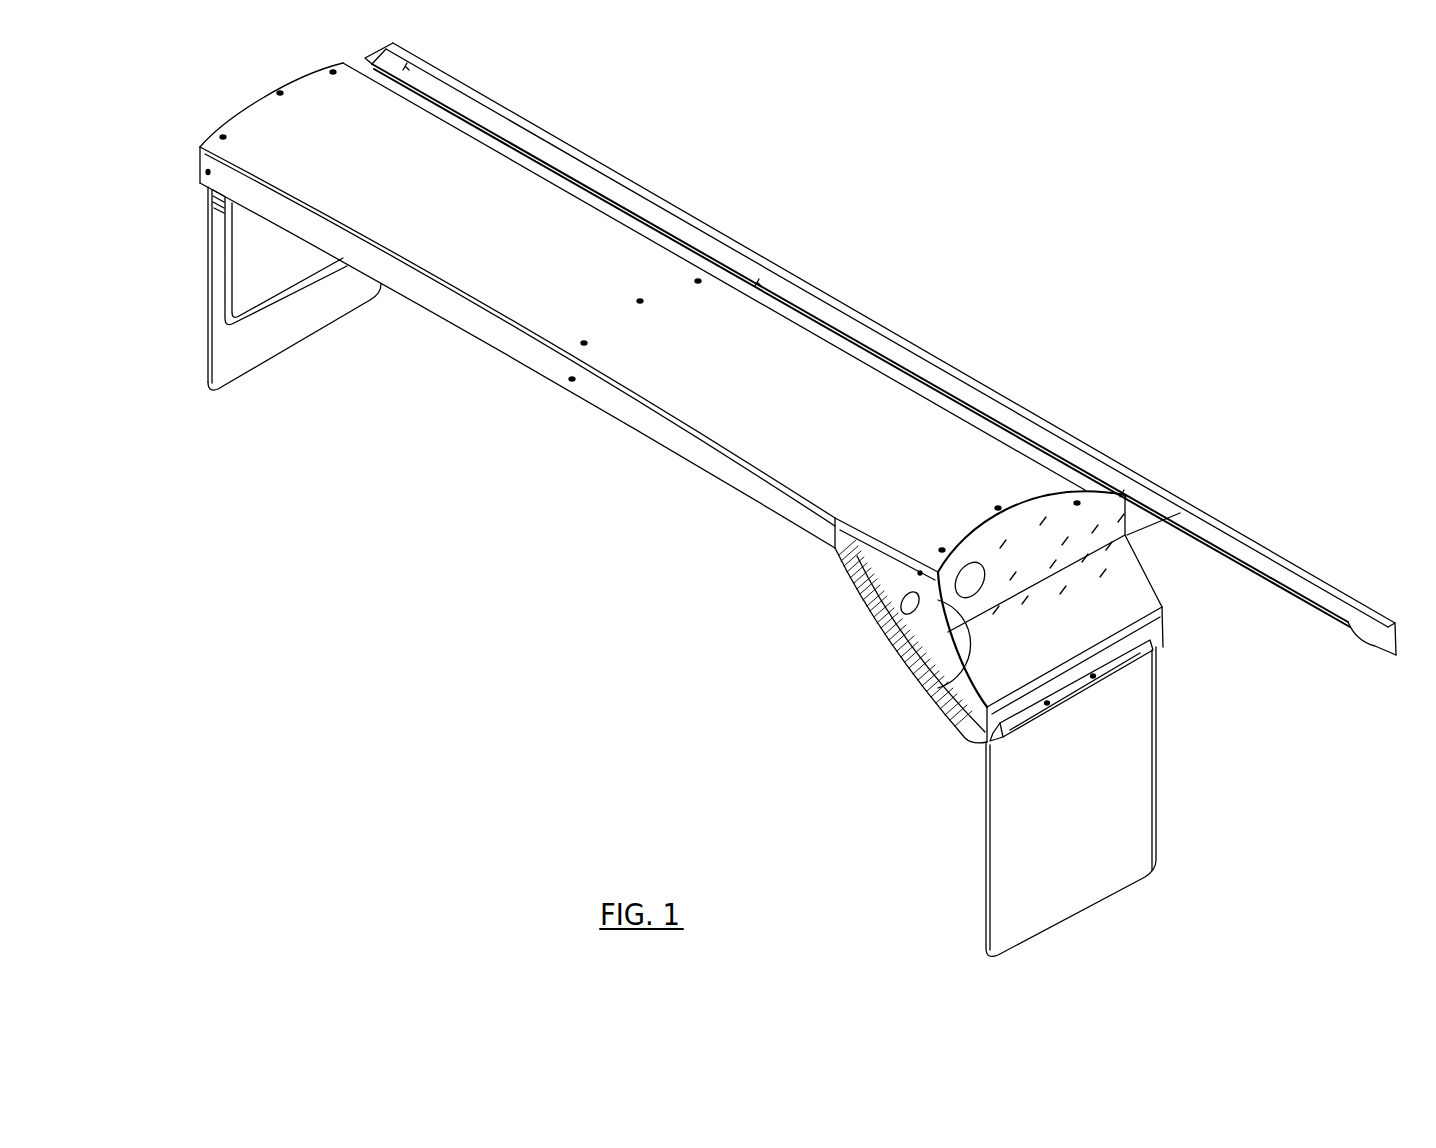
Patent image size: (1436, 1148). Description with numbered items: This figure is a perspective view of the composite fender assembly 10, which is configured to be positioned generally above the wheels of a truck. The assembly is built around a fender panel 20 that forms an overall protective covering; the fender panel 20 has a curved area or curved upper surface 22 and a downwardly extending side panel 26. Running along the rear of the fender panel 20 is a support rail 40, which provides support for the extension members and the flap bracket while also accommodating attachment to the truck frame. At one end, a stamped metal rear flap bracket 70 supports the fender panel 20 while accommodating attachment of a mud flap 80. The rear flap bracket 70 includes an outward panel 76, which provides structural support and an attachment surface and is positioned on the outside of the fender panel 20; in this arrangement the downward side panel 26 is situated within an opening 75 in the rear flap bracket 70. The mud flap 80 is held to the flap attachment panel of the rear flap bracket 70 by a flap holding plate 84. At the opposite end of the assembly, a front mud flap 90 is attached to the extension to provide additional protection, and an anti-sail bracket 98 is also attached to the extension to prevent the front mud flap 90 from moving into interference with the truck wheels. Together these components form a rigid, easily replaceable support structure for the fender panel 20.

The composite fender assembly 10 is at (1212, 277).
The fender panel 20 is at (640, 437).
The curved upper surface 22 is at (859, 440).
The side panel 26 is at (525, 349).
The support rail 40 is at (933, 367).
The rear flap bracket 70 is at (1190, 605).
The opening 75 is at (940, 690).
The outward panel 76 is at (877, 600).
The mud flap 80 is at (1140, 818).
The flap holding plate 84 is at (1025, 717).
The front mud flap 90 is at (247, 362).
The anti-sail bracket 98 is at (225, 280).